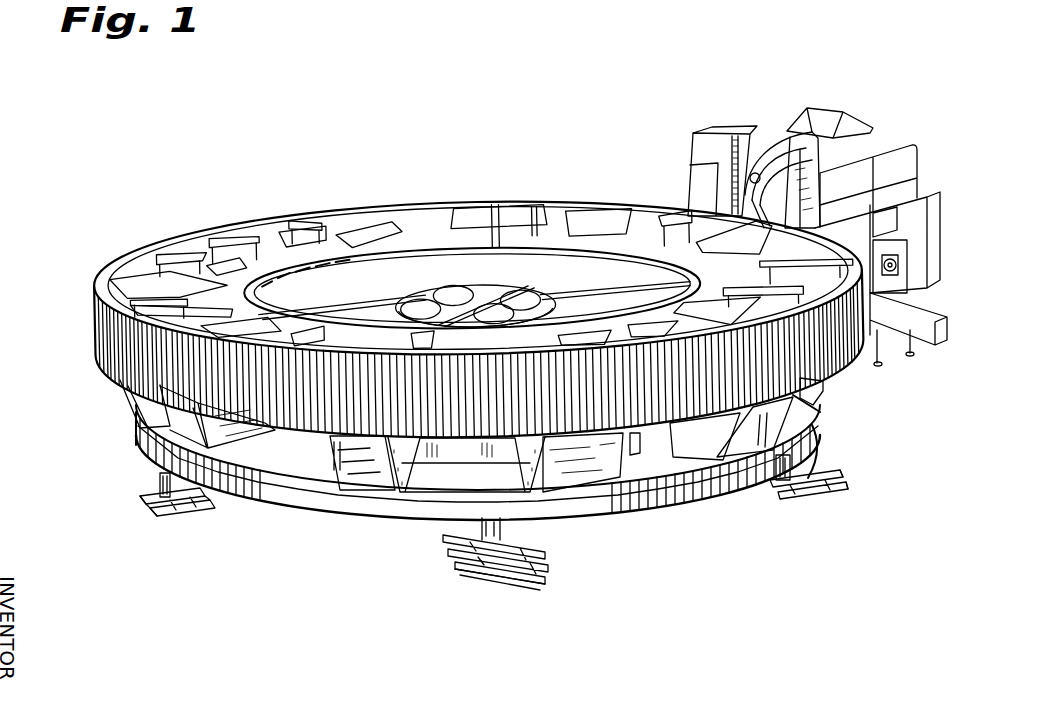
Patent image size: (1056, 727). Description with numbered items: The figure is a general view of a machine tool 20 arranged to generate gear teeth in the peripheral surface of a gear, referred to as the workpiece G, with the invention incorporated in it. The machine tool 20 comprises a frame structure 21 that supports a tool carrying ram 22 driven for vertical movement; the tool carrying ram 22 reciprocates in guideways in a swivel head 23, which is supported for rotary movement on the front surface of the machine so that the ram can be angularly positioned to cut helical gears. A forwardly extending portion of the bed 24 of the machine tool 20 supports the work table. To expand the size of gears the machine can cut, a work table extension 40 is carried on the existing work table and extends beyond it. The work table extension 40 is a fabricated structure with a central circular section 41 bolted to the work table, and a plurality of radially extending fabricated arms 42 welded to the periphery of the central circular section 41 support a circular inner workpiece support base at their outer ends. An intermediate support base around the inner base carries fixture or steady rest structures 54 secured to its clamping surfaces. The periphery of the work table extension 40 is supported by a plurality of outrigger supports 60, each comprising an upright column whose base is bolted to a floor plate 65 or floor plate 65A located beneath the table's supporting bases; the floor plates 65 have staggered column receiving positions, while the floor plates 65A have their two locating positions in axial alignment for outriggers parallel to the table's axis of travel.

The workpiece G is at (419, 192).
The machine tool 20 is at (875, 124).
The frame structure 21 is at (930, 208).
The tool carrying ram 22 is at (688, 168).
The swivel head 23 is at (826, 165).
The bed 24 is at (915, 300).
The work table extension 40 is at (595, 522).
The central circular section 41 is at (498, 295).
The radially extending fabricated arms 42 is at (378, 310).
The fixture or steady rest structures 54 is at (160, 405).
The outrigger supports 60 is at (190, 498).
The floor plate 65 is at (508, 568).
The floor plate 65A is at (150, 488).